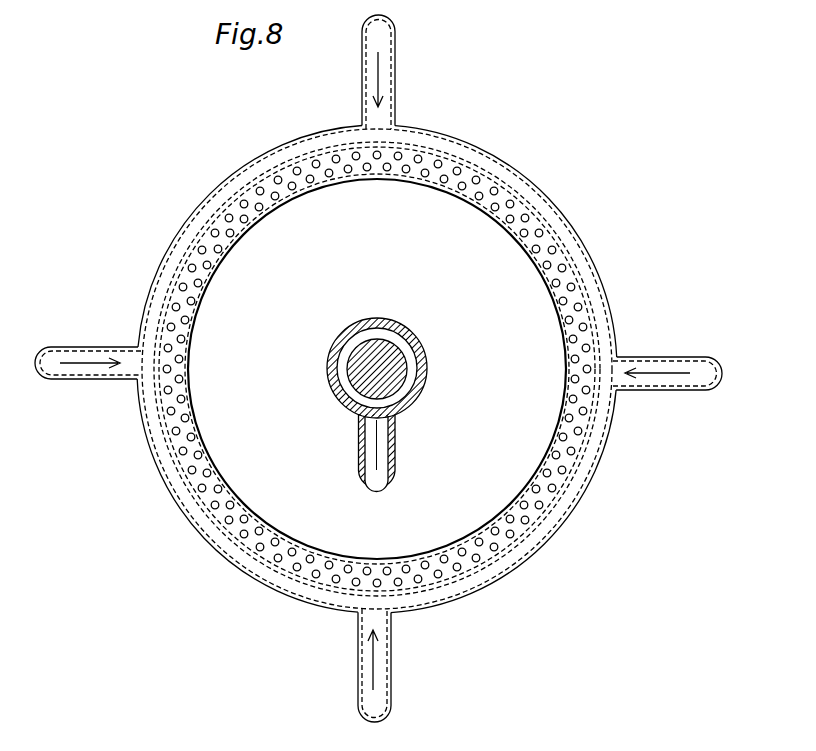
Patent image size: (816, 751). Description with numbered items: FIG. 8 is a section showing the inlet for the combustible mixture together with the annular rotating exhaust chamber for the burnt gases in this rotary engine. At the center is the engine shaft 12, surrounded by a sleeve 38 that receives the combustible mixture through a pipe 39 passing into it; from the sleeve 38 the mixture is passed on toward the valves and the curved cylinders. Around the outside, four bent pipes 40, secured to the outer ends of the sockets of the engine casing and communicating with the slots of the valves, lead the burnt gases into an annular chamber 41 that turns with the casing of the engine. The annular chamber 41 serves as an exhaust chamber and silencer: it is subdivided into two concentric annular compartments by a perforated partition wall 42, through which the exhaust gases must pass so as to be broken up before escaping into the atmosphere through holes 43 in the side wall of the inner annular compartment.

The shaft 12 is at (378, 370).
The sleeve 38 is at (335, 378).
The pipe 39 is at (370, 477).
The bent pipes 40 is at (376, 81).
The annular chamber 41 is at (332, 183).
The perforated partition wall 42 is at (472, 168).
The holes 43 is at (500, 212).